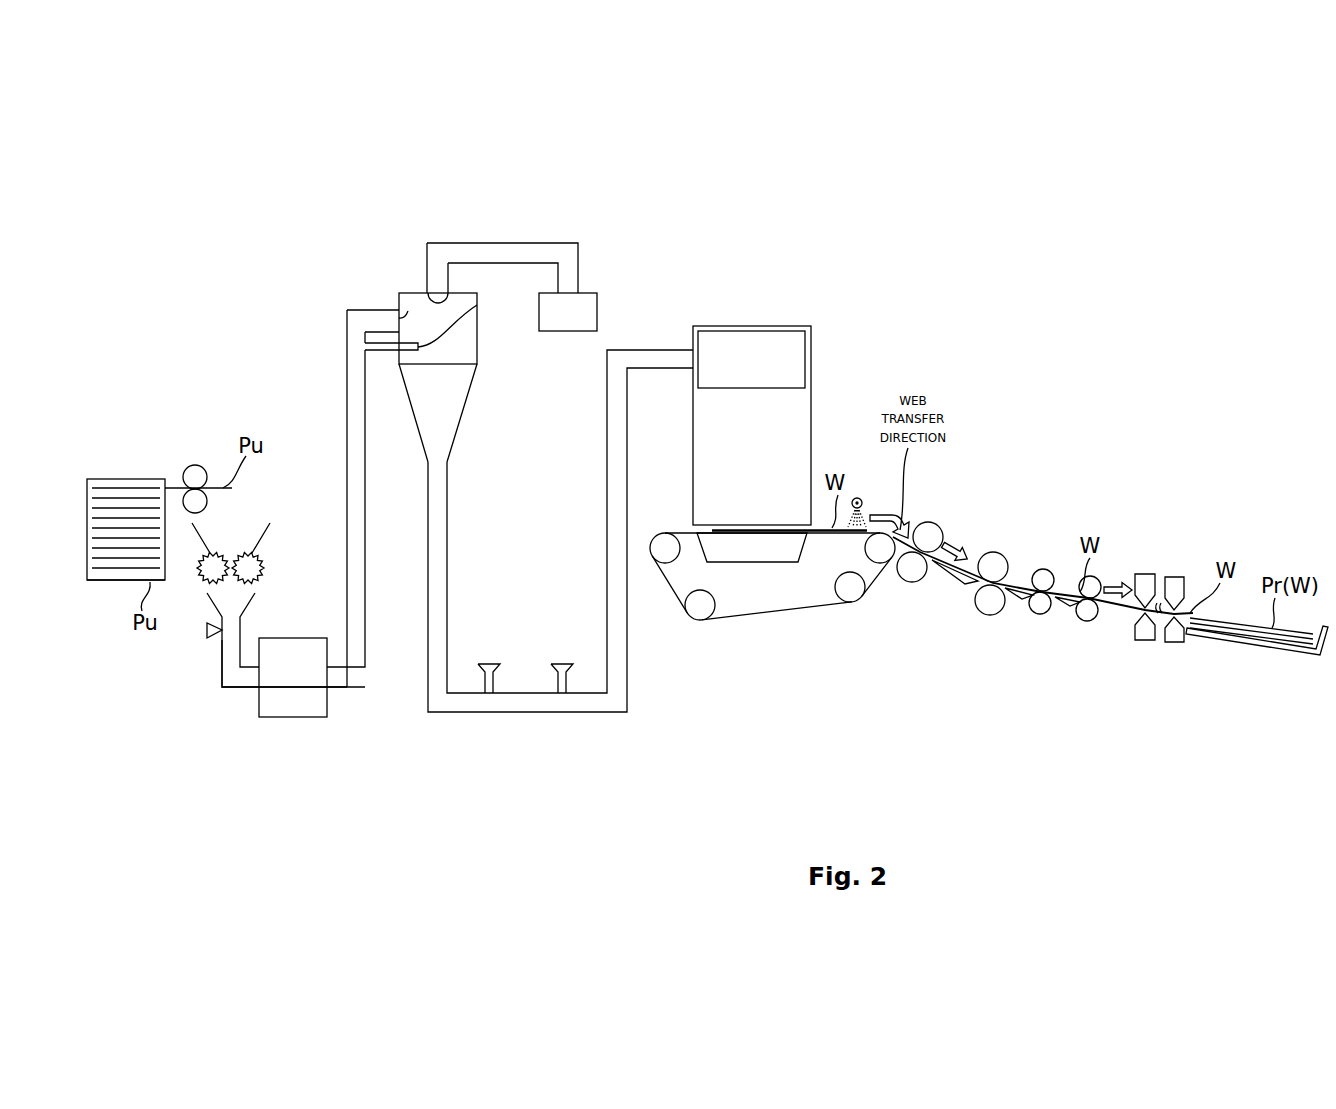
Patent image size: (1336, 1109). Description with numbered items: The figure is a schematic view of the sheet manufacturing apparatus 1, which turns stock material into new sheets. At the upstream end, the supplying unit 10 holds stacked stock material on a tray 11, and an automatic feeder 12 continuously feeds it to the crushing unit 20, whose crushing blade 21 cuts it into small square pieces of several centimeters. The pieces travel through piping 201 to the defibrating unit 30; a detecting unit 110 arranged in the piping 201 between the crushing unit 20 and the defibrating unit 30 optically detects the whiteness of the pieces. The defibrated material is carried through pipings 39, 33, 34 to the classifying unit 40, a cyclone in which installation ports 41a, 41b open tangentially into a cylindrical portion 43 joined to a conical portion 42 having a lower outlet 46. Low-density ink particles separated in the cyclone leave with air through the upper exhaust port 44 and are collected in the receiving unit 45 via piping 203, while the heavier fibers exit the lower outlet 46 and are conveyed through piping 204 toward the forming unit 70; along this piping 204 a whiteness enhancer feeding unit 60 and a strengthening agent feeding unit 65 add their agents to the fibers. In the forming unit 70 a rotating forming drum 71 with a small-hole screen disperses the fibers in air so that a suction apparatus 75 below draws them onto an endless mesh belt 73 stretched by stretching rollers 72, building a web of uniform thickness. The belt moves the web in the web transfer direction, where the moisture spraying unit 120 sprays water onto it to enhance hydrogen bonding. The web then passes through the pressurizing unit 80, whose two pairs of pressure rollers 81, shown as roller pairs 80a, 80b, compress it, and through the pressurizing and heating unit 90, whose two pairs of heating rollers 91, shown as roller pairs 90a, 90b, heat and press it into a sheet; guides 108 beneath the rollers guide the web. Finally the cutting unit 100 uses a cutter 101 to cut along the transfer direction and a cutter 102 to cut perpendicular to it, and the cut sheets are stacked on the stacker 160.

The sheet manufacturing apparatus 1 is at (708, 213).
The supplying unit 10 is at (130, 471).
The tray 11 is at (105, 582).
The automatic feeder 12 is at (182, 469).
The crushing unit 20 is at (278, 585).
The crushing blade 21 is at (263, 567).
The defibrating unit 30 is at (295, 635).
The piping 33 is at (355, 310).
The piping 34 is at (392, 351).
The piping 39 is at (347, 407).
The classifying unit 40 is at (456, 341).
The installation port 41a is at (408, 310).
The installation port 41b is at (477, 305).
The conical portion 42 is at (455, 418).
The cylindrical portion 43 is at (468, 333).
The upper exhaust port 44 is at (428, 292).
The receiving unit 45 is at (606, 287).
The lower outlet 46 is at (440, 455).
The whiteness enhancer feeding unit 60 is at (489, 656).
The strengthening agent feeding unit 65 is at (562, 656).
The forming unit 70 is at (781, 397).
The forming drum 71 is at (745, 340).
The stretching rollers 72 is at (660, 543).
The mesh belt 73 is at (796, 612).
The suction apparatus 75 is at (740, 556).
The pressurizing unit 80 is at (988, 532).
The first pressurizing section 80a is at (977, 478).
The second pressurizing section 80b is at (1035, 478).
The pressure rollers 81 is at (930, 538).
The pressurizing and heating unit 90 is at (1107, 562).
The first heating section 90a is at (1086, 518).
The second heating section 90b is at (1145, 518).
The heating rollers 91 is at (1045, 578).
The cutting unit 100 is at (1168, 659).
The cutter 101 is at (1143, 645).
The cutter 102 is at (1190, 640).
The guides 108 is at (950, 581).
The detecting unit 110 is at (207, 631).
The moisture spraying unit 120 is at (860, 490).
The stacker 160 is at (1263, 654).
The piping 201 is at (222, 658).
The piping 203 is at (513, 243).
The piping 204 is at (607, 500).